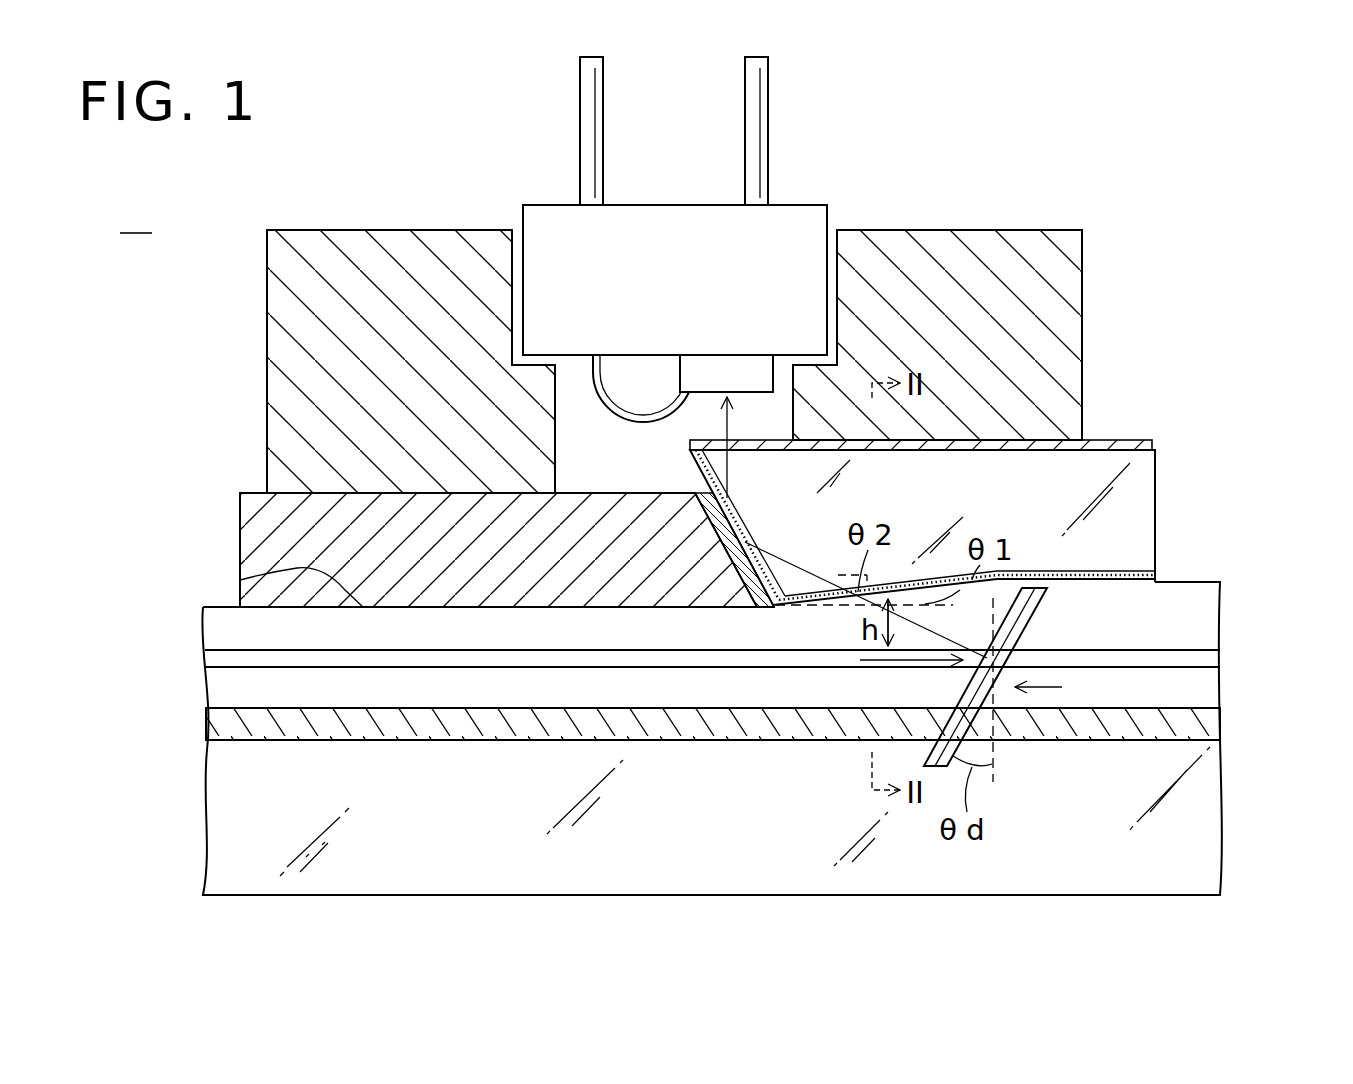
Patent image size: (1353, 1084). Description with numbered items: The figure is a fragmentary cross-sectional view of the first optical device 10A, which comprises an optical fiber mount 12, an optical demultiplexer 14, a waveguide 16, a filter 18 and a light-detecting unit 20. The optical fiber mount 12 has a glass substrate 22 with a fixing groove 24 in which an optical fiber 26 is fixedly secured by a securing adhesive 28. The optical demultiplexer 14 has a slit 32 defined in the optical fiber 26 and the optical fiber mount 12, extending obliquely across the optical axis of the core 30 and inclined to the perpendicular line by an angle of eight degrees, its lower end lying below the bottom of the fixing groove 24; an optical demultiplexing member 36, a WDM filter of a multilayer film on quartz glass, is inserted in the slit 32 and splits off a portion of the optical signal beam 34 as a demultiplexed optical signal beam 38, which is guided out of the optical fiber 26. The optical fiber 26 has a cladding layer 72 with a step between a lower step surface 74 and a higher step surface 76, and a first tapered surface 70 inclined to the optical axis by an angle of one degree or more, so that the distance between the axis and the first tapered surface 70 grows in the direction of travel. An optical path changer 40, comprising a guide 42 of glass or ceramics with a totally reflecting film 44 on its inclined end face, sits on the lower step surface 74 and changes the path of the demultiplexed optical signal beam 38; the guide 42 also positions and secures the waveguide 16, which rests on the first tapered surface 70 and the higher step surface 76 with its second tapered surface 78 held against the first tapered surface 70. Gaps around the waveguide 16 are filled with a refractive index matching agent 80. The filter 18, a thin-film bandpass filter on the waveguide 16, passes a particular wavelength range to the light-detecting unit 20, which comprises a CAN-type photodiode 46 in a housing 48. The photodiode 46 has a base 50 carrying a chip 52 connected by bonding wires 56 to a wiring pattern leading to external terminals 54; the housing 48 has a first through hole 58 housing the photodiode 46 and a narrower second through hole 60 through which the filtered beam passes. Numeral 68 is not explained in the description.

The first optical device 10A is at (153, 217).
The optical fiber mount 12 is at (1230, 856).
The optical demultiplexer 14 is at (1057, 690).
The waveguide 16 is at (958, 527).
The filter 18 is at (1115, 440).
The light-detecting unit 20 is at (710, 323).
The glass substrate 22 is at (1152, 896).
The fixing groove 24 is at (248, 738).
The optical fiber 26 is at (1212, 578).
The securing adhesive 28 is at (400, 742).
The core 30 is at (1207, 658).
The slit 32 is at (978, 690).
The optical signal beam 34 is at (880, 665).
The optical demultiplexing member 36 is at (1020, 622).
The demultiplexed optical signal beam 38 is at (796, 562).
The optical path changer 40 is at (640, 609).
The guide 42 is at (250, 530).
The totally reflecting film 44 is at (742, 550).
The photodiode 46 is at (677, 275).
The housing 48 is at (1072, 268).
The base 50 is at (665, 212).
The chip 52 is at (722, 372).
The external terminals 54 is at (762, 72).
The bonding wires 56 is at (648, 418).
The first through hole 58 is at (513, 263).
The second through hole 60 is at (558, 387).
The gap 68 is at (803, 360).
The first tapered surface 70 is at (908, 578).
The cladding layer 72 is at (1205, 606).
The lower step surface 74 is at (240, 580).
The higher step surface 76 is at (1172, 580).
The second tapered surface 78 is at (786, 608).
The refractive index matching agent 80 is at (760, 607).